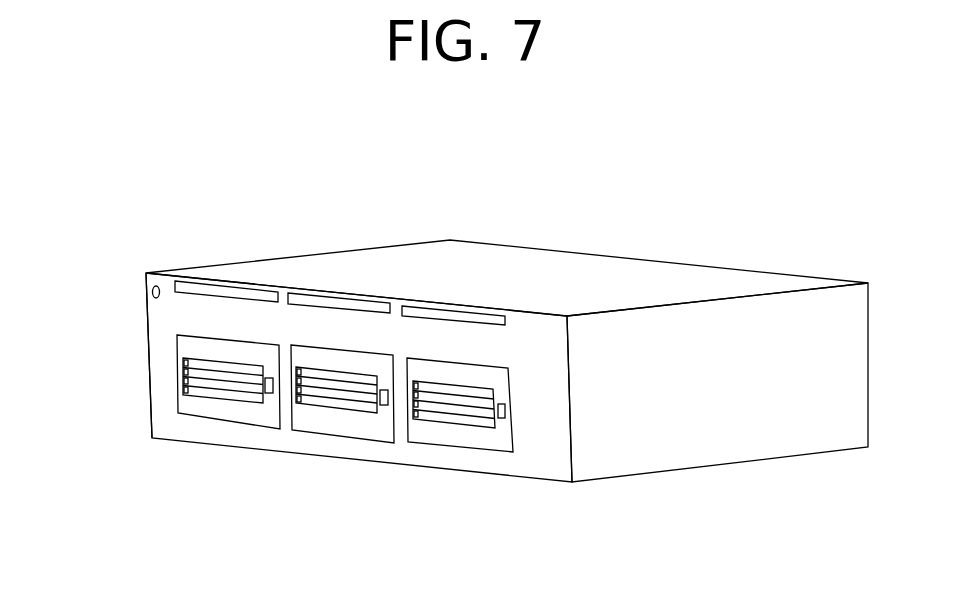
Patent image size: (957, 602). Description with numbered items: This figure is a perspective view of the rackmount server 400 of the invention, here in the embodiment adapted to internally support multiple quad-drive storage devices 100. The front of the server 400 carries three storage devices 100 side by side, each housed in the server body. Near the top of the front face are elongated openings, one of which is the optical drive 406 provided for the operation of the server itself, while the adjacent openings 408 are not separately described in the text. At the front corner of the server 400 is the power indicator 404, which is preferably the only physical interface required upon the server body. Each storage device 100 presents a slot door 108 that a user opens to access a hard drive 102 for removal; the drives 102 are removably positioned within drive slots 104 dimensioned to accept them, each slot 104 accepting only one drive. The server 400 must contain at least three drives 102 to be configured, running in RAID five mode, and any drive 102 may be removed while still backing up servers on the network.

The rackmount server 400 is at (319, 152).
The power indicator 404 is at (147, 273).
The optical drive 406 is at (256, 292).
The slot 408 is at (367, 298).
The storage device 100 is at (177, 344).
The hard drive 102 is at (207, 392).
The slot door 108 is at (333, 405).
The drive slot 104 is at (490, 452).